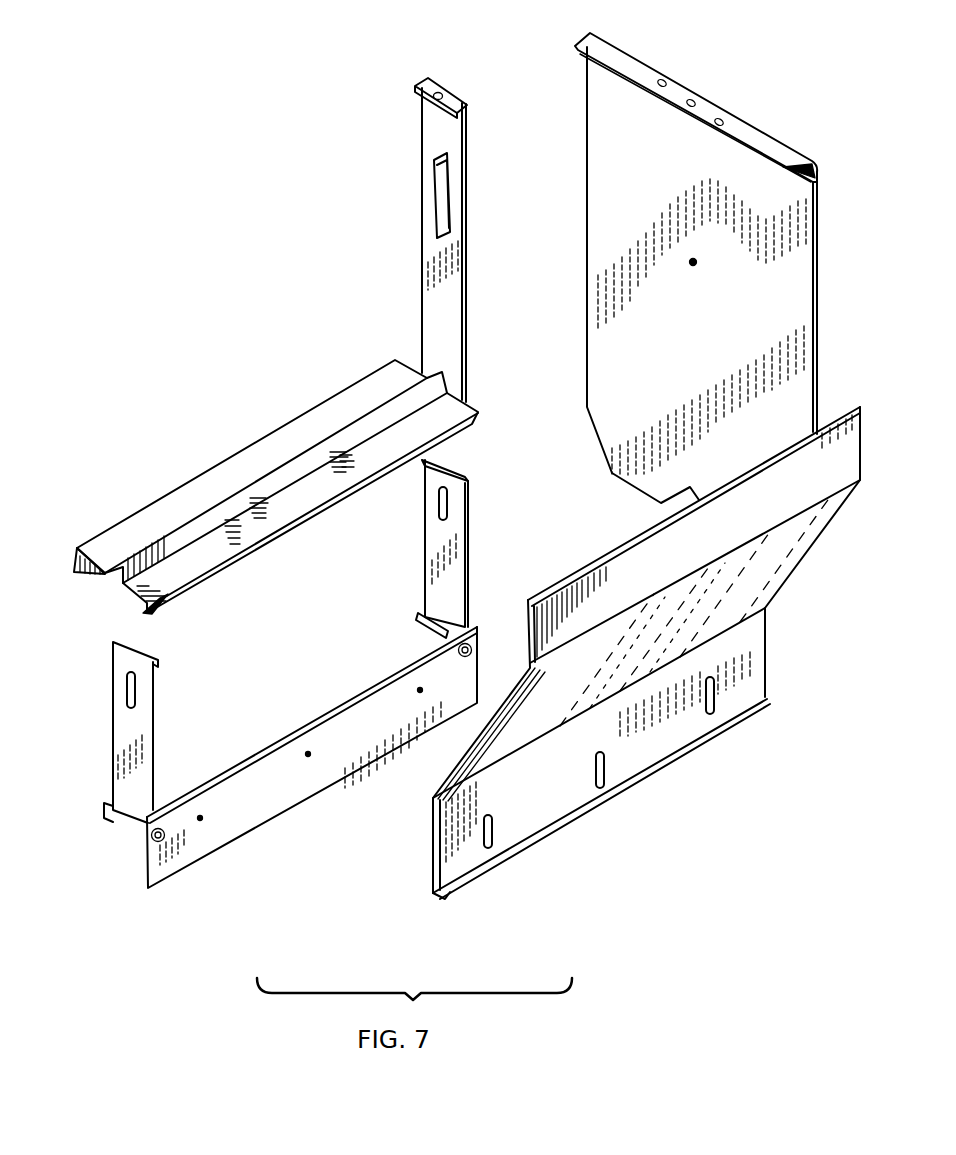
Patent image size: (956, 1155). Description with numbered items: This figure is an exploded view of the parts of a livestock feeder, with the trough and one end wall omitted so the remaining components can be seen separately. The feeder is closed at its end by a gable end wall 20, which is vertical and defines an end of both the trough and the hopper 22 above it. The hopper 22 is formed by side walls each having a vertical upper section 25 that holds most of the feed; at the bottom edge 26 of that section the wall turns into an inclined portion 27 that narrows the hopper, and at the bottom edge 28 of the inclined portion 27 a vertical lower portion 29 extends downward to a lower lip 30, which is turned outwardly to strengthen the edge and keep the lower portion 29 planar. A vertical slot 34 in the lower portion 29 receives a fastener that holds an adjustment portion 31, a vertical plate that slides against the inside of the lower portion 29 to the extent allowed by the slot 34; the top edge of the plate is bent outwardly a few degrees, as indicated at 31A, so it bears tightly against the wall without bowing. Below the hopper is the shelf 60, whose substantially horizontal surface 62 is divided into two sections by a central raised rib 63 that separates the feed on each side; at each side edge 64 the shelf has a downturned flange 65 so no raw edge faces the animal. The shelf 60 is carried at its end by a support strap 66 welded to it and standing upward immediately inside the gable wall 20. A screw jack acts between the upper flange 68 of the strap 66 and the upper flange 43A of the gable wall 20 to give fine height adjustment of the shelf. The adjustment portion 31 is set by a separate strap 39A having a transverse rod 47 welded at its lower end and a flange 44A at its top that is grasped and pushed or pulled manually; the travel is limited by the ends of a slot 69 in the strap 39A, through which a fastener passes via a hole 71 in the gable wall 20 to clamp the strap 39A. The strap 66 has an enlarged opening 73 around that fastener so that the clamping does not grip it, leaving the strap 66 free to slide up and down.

The end wall 20 is at (687, 268).
The upper flange of the gable wall 43A is at (772, 152).
The hole 71 is at (696, 264).
The hopper 22 is at (655, 653).
The vertical upper section 25 is at (623, 560).
The bottom edge of the upper section 26 is at (694, 574).
The inclined portion 27 is at (805, 545).
The bottom edge of the inclined portion 28 is at (735, 632).
The vertical lower portion 29 is at (745, 672).
The lower lip 30 is at (715, 742).
The vertical slot 34 is at (608, 768).
The shelf 60 is at (276, 490).
The horizontal surface 62 is at (197, 495).
The central raised rib 63 is at (378, 406).
The side edge 64 is at (132, 510).
The downturned flange 65 is at (218, 595).
The support strap 66 is at (408, 226).
The upper flange of the strap 68 is at (421, 85).
The enlarged opening 73 is at (438, 196).
The strap 39A is at (448, 549).
The flange 44A is at (457, 478).
The slot 69 is at (440, 500).
The transverse rod 47 is at (438, 632).
The adjustment portion 31 is at (290, 757).
The bent top edge 31A is at (345, 694).